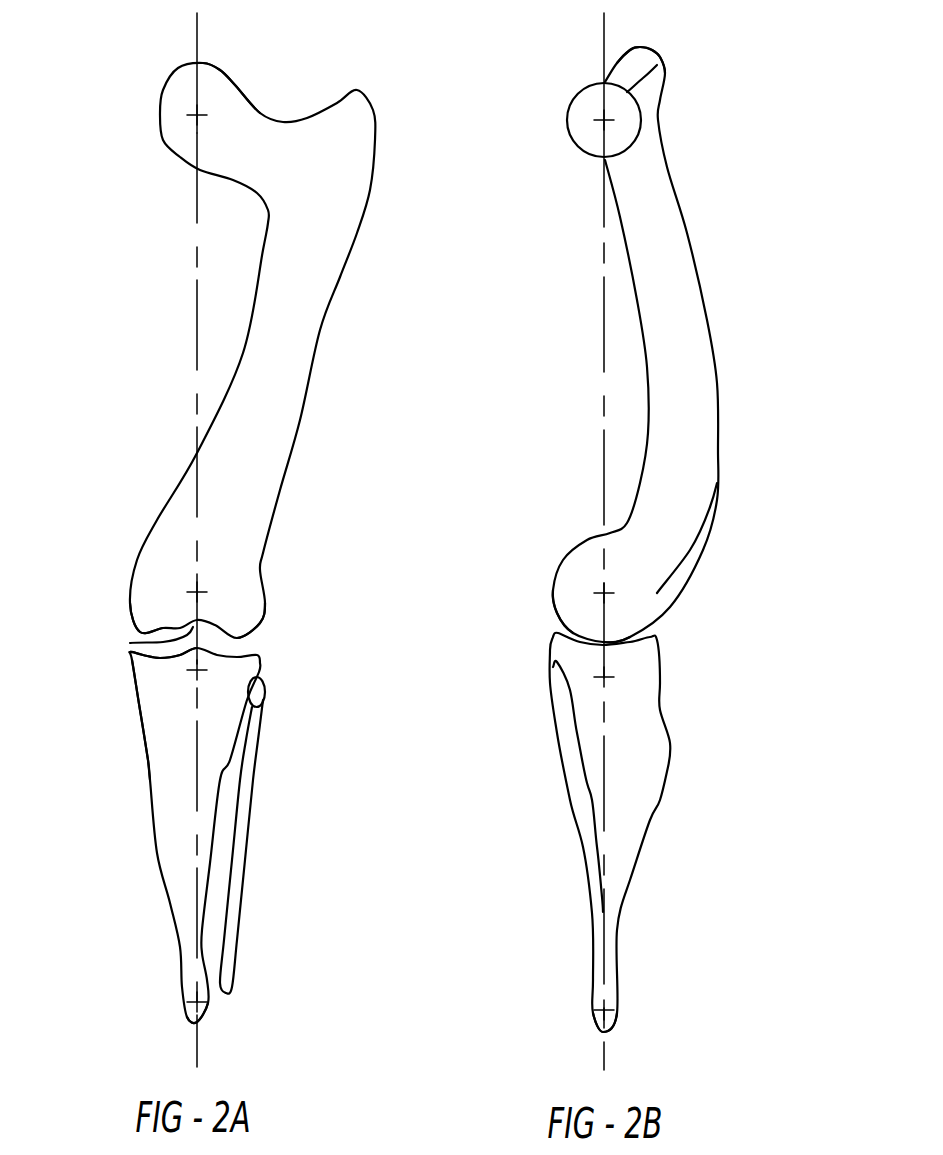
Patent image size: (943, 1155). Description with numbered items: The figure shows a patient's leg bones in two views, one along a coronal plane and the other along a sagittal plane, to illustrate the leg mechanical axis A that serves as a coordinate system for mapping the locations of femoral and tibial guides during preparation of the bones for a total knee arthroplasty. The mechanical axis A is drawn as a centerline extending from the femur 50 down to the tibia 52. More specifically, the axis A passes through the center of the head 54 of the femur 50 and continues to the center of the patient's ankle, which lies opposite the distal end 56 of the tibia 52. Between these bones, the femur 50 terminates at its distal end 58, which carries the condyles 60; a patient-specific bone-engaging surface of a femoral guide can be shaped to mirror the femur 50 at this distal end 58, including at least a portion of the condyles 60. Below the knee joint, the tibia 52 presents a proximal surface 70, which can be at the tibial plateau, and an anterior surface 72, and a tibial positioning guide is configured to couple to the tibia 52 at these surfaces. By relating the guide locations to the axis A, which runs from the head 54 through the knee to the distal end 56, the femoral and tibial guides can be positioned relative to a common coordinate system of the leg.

In FIG. 2A, the leg mechanical axis A is at (197, 40).
In FIG. 2B, the leg mechanical axis A is at (603, 38).
In FIG. 2A, the femur 50 is at (357, 113).
In FIG. 2B, the femur 50 is at (680, 280).
In FIG. 2A, the tibia 52 is at (240, 668).
In FIG. 2B, the tibia 52 is at (650, 743).
In FIG. 2A, the head 54 is at (223, 70).
In FIG. 2B, the head 54 is at (660, 60).
In FIG. 2A, the distal end 56 is at (197, 1020).
In FIG. 2B, the distal end 56 is at (603, 1033).
In FIG. 2A, the distal end 58 is at (130, 643).
In FIG. 2B, the distal end 58 is at (630, 632).
In FIG. 2A, the condyles 60 is at (150, 632).
In FIG. 2B, the condyles 60 is at (560, 615).
In FIG. 2A, the proximal surface 70 is at (160, 660).
In FIG. 2A, the anterior surface 72 is at (157, 675).